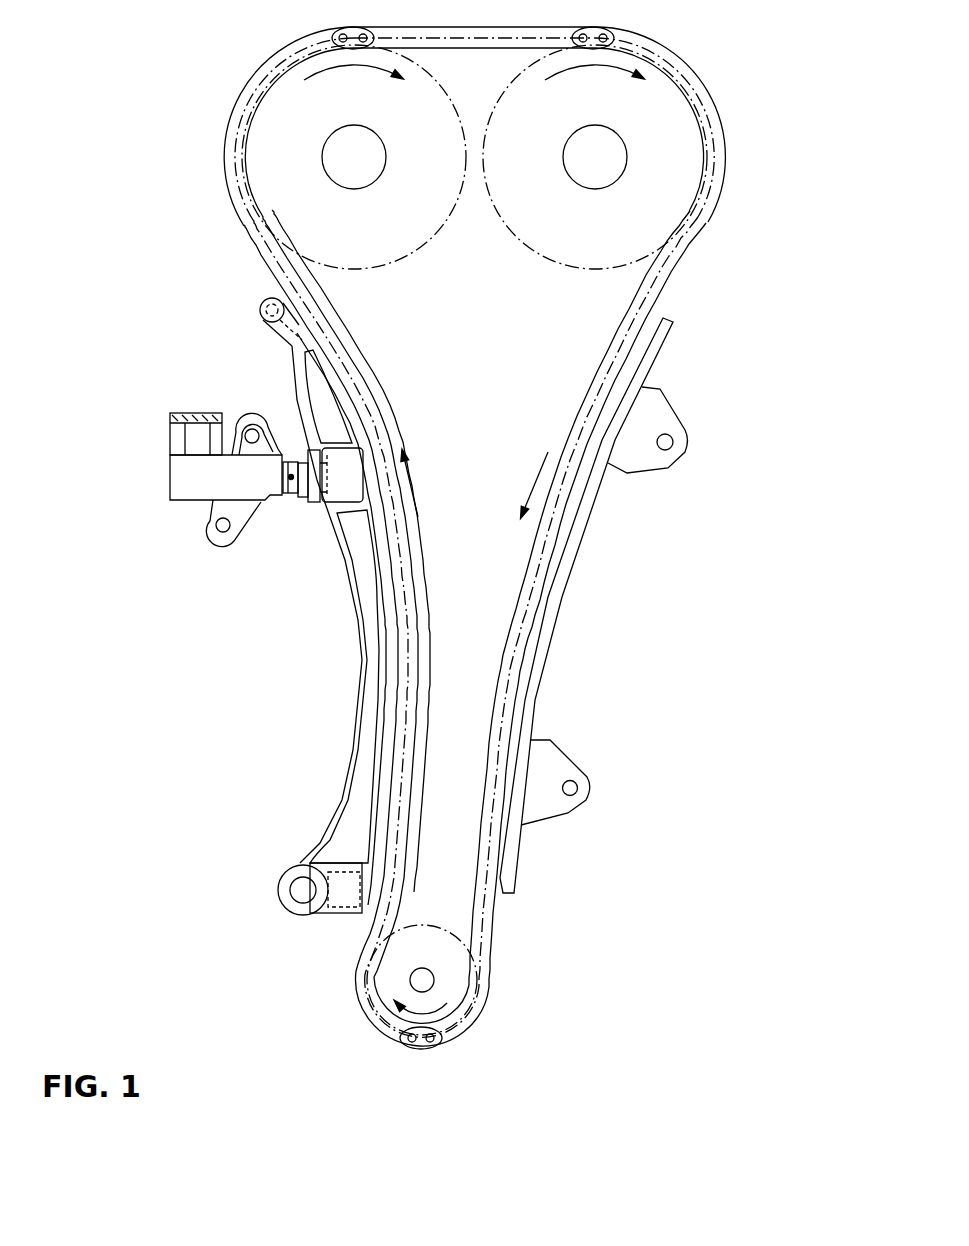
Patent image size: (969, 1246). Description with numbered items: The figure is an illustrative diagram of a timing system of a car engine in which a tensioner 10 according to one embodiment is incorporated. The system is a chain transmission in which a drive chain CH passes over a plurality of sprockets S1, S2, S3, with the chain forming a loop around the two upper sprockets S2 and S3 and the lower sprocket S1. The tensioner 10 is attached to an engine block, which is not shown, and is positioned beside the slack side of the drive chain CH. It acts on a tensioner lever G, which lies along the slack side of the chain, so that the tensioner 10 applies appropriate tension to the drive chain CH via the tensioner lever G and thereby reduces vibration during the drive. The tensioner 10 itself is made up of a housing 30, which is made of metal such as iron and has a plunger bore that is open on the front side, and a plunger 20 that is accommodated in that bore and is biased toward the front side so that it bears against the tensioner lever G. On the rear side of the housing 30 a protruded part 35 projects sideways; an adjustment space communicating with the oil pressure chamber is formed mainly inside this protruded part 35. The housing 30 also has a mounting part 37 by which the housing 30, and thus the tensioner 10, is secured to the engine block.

The tensioner 10 is at (147, 407).
The plunger 20 is at (293, 482).
The housing 30 is at (206, 468).
The protruded part 35 is at (188, 438).
The mounting part 37 is at (252, 423).
The drive chain CH is at (660, 277).
The tensioner lever G is at (363, 787).
The sprocket S1 is at (453, 980).
The sprocket S2 is at (270, 150).
The sprocket S3 is at (657, 143).